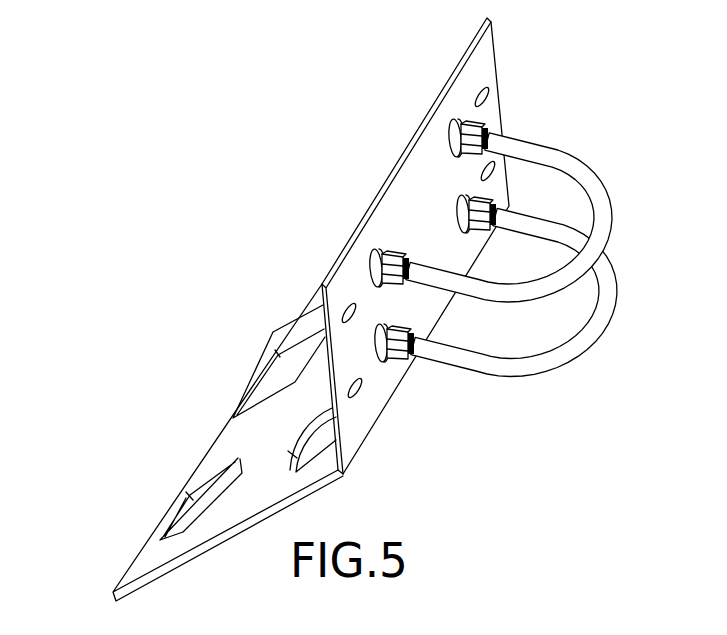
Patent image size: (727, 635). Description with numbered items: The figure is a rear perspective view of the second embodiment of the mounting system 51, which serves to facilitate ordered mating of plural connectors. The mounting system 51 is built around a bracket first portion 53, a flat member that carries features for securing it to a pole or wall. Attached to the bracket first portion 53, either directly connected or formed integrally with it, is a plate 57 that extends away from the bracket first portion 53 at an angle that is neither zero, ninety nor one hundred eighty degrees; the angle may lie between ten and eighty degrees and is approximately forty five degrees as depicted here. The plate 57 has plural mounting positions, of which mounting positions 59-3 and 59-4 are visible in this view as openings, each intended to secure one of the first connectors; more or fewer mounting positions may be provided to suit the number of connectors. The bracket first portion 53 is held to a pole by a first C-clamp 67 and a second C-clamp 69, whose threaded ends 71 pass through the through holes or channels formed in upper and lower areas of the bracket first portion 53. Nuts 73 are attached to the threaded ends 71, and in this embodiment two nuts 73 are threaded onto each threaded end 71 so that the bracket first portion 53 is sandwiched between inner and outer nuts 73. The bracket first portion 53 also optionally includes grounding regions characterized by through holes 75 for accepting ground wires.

The mounting system 51 is at (367, 309).
The bracket first portion 53 is at (418, 172).
The plate 57 is at (194, 442).
The mounting position 59-3 is at (263, 370).
The mounting position 59-4 is at (172, 521).
The first C-clamp 67 is at (602, 195).
The second C-clamp 69 is at (616, 293).
The threaded end 71 is at (487, 130).
The nut 73 is at (388, 255).
The through hole 75 is at (482, 88).